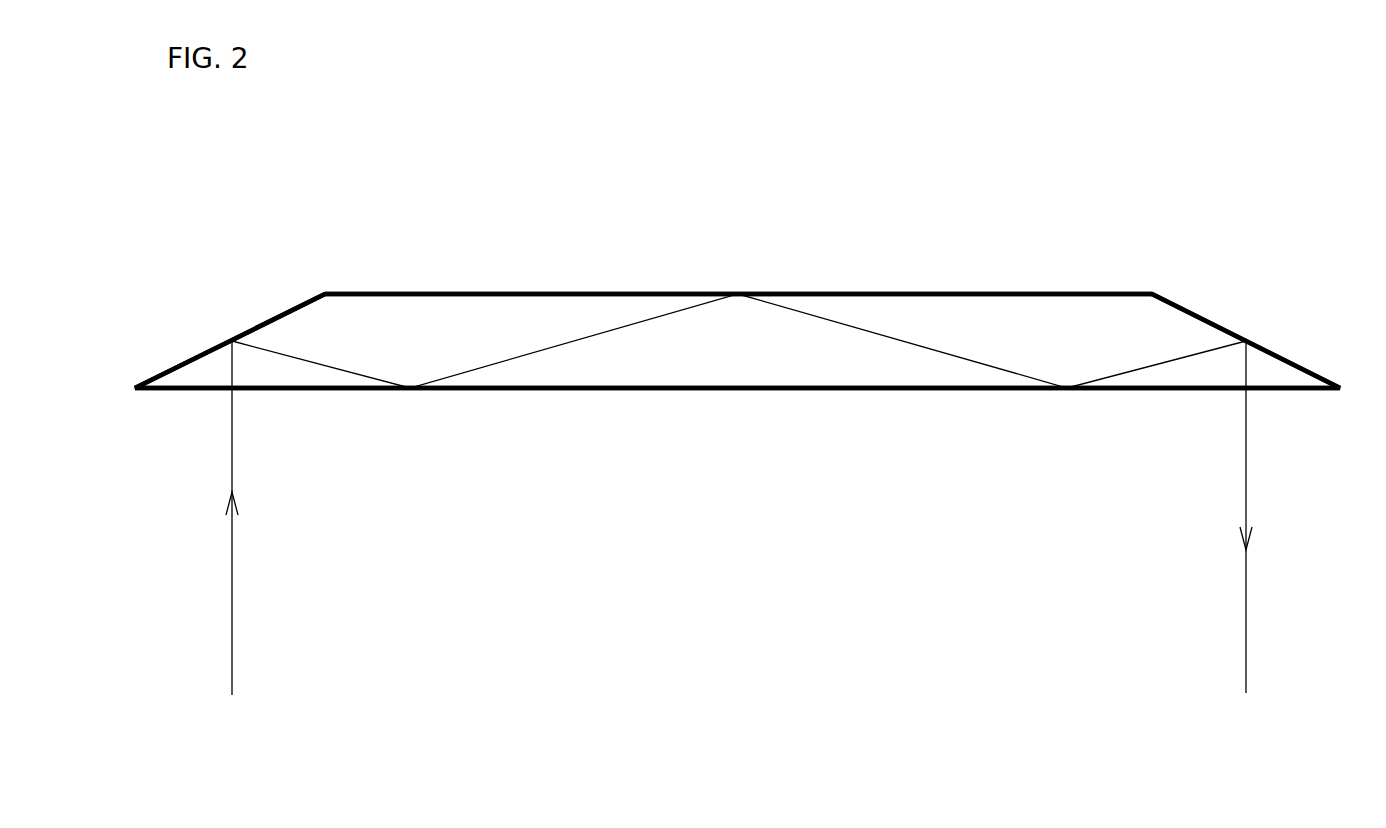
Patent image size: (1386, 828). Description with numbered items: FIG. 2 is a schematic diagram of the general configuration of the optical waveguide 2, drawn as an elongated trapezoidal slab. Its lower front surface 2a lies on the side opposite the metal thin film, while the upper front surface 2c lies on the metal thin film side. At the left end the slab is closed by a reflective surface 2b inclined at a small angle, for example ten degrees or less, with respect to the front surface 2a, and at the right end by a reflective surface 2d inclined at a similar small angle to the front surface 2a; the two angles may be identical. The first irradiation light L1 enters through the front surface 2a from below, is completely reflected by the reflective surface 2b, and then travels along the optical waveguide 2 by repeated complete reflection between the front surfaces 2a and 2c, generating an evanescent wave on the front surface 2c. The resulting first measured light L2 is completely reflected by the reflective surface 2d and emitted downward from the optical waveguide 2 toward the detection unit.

The optical waveguide 2 is at (990, 291).
The front surface 2a is at (735, 391).
The reflective surface 2b is at (283, 309).
The front surface 2c is at (694, 291).
The reflective surface 2d is at (1205, 312).
The first irradiation light L1 is at (232, 590).
The first measured light L2 is at (1246, 607).